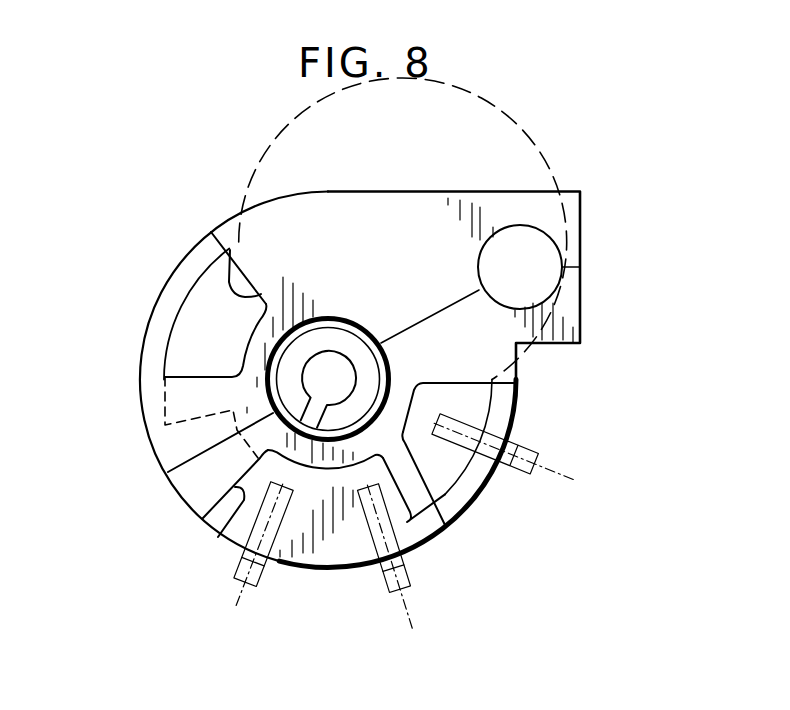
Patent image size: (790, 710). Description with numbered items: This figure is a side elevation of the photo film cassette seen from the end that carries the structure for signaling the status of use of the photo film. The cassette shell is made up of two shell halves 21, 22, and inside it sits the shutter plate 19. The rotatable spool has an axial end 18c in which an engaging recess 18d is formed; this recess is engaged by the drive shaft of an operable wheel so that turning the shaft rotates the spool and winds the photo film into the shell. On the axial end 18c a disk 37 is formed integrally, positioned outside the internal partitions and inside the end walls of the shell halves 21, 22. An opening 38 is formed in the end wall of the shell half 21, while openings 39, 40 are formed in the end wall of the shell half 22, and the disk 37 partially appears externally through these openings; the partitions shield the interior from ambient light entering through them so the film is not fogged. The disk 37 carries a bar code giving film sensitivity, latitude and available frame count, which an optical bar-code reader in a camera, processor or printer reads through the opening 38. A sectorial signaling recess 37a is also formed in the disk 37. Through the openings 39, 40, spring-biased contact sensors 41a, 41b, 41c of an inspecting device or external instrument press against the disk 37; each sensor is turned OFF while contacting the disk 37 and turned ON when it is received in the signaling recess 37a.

The axial end 18c is at (333, 342).
The engaging recess 18d is at (340, 380).
The shutter plate 19 is at (520, 248).
The shell half 21 is at (152, 409).
The shell half 22 is at (192, 483).
The disk 37 is at (200, 328).
The signaling recess 37a is at (422, 542).
The opening 38 is at (232, 282).
The opening 39 is at (505, 390).
The opening 40 is at (224, 521).
The contact sensor 41a is at (234, 614).
The contact sensor 41b is at (417, 582).
The contact sensor 41c is at (575, 496).